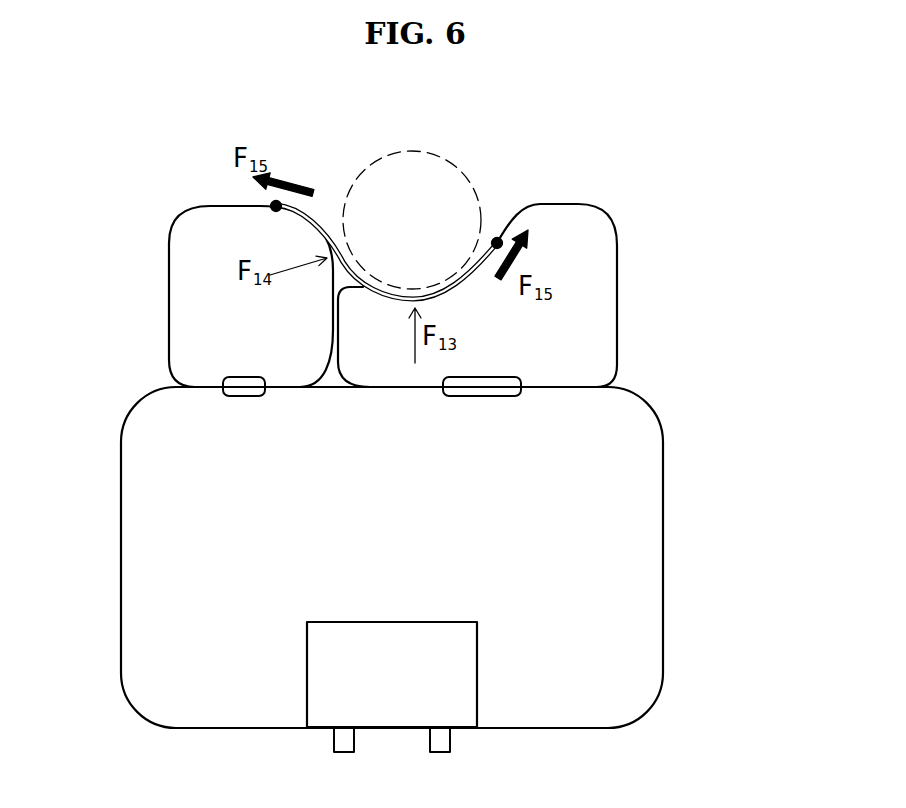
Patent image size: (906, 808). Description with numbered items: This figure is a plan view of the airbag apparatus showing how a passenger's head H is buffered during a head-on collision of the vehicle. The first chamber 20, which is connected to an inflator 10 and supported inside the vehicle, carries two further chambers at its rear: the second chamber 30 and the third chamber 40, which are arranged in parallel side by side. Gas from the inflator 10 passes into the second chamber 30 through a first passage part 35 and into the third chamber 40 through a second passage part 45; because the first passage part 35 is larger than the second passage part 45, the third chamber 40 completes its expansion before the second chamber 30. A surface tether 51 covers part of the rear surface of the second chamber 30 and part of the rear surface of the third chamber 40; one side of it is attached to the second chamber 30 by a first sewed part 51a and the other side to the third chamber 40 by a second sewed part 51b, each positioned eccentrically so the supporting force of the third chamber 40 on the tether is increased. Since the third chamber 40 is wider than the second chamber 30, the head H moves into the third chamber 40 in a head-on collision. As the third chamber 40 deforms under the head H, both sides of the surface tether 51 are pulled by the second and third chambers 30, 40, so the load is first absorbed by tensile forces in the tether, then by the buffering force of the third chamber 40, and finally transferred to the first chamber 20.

The inflator 10 is at (447, 693).
The first chamber 20 is at (663, 490).
The second chamber 30 is at (169, 273).
The first passage part 35 is at (247, 397).
The third chamber 40 is at (617, 283).
The second passage part 45 is at (500, 397).
The surface tether 51 is at (350, 268).
The first sewed part 51a is at (276, 206).
The second sewed part 51b is at (497, 243).
The head H is at (450, 162).